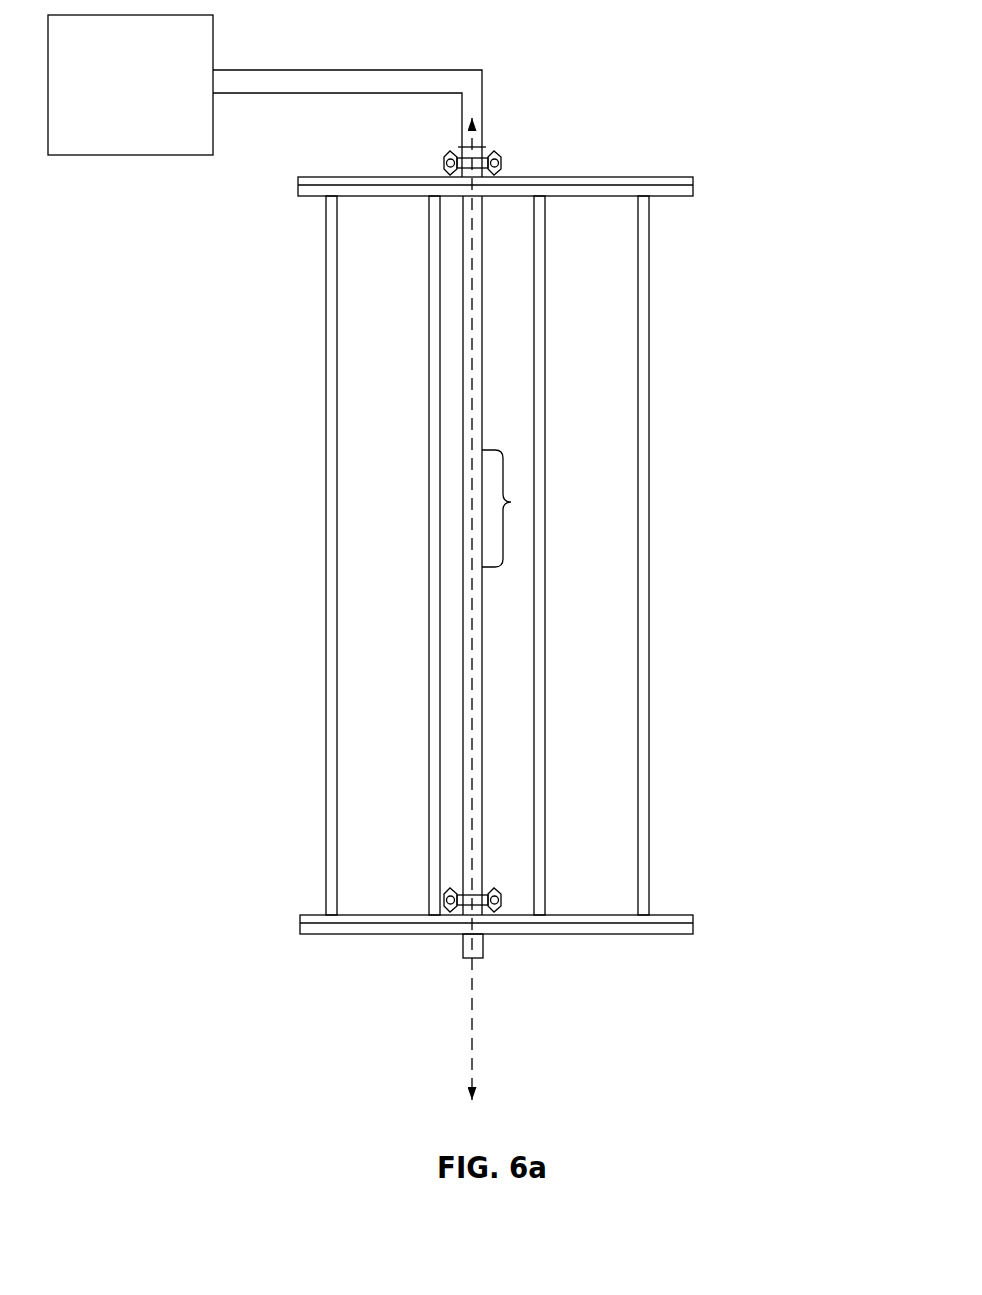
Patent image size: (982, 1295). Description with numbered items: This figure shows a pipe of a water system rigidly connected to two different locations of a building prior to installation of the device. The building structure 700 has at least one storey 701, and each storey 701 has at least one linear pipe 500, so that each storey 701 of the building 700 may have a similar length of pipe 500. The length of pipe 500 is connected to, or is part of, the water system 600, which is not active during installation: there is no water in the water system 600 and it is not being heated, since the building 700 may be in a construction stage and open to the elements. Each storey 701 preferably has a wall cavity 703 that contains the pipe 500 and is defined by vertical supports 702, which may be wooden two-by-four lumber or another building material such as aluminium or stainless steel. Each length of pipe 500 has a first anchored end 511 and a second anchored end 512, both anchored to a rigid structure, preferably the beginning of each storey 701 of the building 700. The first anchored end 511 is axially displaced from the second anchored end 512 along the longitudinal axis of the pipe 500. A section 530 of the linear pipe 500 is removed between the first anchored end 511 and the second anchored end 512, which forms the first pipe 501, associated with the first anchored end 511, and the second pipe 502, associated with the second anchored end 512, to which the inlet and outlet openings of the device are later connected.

The water system 600 is at (80, 170).
The building structure 700 is at (382, 536).
The storey 701 is at (382, 519).
The vertical supports 702 is at (427, 862).
The wall cavity 703 is at (387, 896).
The linear pipe 500 is at (510, 585).
The first pipe 501 is at (484, 290).
The second pipe 502 is at (484, 720).
The first anchored end 511 is at (514, 160).
The second anchored end 512 is at (503, 888).
The section 530 is at (516, 502).